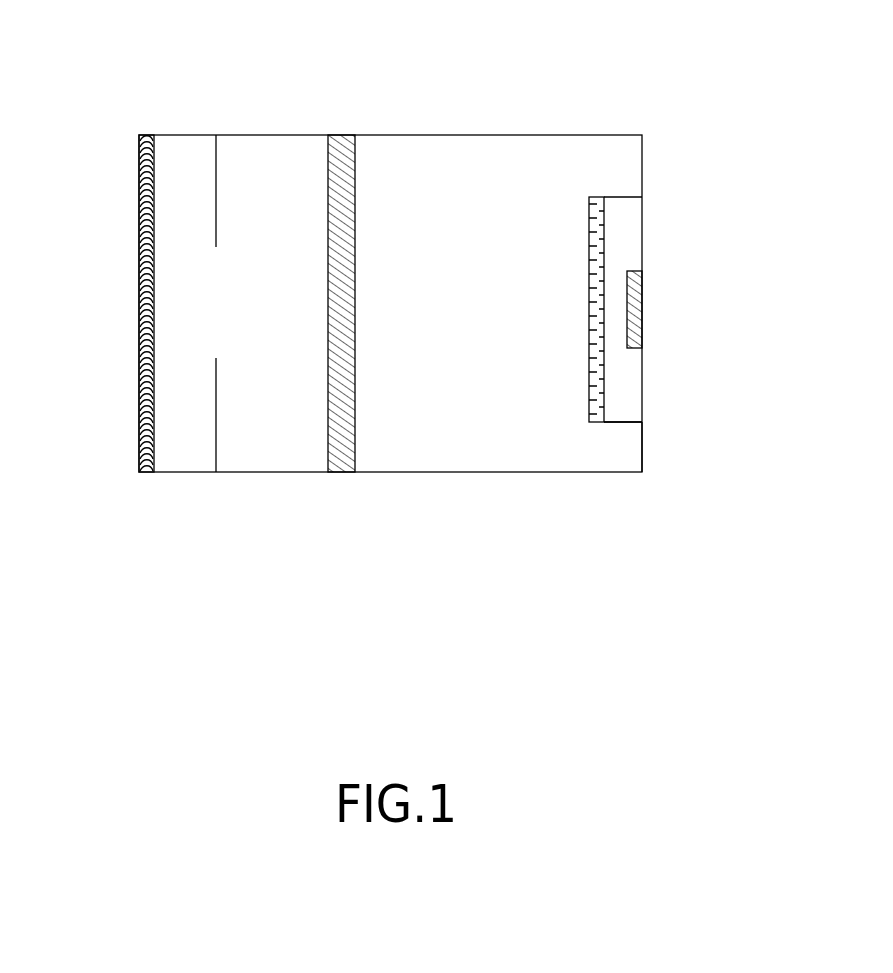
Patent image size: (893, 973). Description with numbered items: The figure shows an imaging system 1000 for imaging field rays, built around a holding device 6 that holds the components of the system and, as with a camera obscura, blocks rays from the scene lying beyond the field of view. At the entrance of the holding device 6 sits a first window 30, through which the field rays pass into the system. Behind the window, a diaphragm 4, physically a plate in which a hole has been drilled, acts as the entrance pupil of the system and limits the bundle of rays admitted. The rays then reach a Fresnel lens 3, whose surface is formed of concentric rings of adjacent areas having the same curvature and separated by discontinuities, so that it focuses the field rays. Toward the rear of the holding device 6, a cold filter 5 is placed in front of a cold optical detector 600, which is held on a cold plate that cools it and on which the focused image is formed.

The imaging system 1000 is at (514, 108).
The first window 30 is at (139, 322).
The diaphragm 4 is at (210, 457).
The Fresnel lens 3 is at (331, 463).
The cold filter 5 is at (590, 243).
The cold optical detector 600 is at (642, 330).
The holding device 6 is at (633, 438).